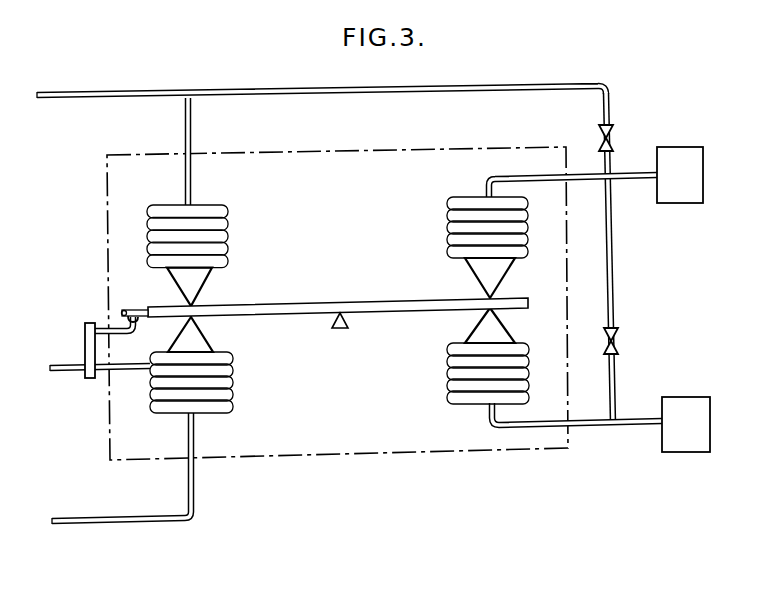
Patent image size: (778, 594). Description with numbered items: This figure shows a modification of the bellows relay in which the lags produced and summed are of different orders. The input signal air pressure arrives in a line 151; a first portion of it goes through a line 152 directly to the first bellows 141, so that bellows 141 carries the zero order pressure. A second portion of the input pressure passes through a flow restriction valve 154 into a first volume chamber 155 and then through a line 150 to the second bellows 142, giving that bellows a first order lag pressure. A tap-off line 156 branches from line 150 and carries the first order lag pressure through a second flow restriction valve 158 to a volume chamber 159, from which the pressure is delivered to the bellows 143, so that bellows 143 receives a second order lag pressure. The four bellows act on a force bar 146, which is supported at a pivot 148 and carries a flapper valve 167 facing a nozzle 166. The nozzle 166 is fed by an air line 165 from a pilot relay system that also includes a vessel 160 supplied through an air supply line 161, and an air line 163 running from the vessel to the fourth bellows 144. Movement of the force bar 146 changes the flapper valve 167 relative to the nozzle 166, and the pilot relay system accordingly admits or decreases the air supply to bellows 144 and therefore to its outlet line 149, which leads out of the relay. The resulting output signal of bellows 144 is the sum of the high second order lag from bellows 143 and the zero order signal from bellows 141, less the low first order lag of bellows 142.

The first bellows 141 is at (230, 232).
The second bellows 142 is at (447, 228).
The bellows 143 is at (447, 373).
The fourth bellows 144 is at (233, 381).
The force bar 146 is at (332, 305).
The pivot 148 is at (350, 322).
The line 149 is at (172, 521).
The line 150 is at (497, 177).
The line 151 is at (150, 93).
The line 152 is at (192, 127).
The flow restriction valve 154 is at (613, 132).
The first volume chamber 155 is at (692, 152).
The tap-off line 156 is at (613, 270).
The flow restriction valve 158 is at (617, 342).
The volume chamber 159 is at (692, 452).
The vessel 160 is at (85, 342).
The air supply line 161 is at (69, 371).
The air line 163 is at (126, 368).
The air line 165 is at (108, 329).
The nozzle 166 is at (127, 311).
The flapper valve 167 is at (152, 303).